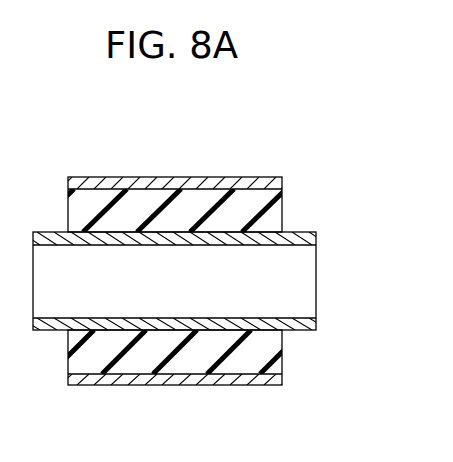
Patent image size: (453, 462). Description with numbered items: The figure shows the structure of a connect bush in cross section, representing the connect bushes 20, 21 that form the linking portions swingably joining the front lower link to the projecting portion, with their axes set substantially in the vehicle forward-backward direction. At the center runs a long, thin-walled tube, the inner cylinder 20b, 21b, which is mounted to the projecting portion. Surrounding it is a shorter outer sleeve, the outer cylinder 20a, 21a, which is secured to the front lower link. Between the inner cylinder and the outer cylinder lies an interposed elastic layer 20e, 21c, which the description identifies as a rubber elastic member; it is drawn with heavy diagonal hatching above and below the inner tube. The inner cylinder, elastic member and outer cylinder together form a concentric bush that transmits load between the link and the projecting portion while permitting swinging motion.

The connect bush 20 is at (225, 232).
The connect bush 21 is at (225, 232).
The outer cylinder 20a is at (230, 279).
The outer cylinder 21a is at (280, 181).
The intermediate layer 20e is at (214, 281).
The rubber elastic member 21c is at (277, 212).
The inner cylinder 20b is at (225, 281).
The inner cylinder 21b is at (317, 238).